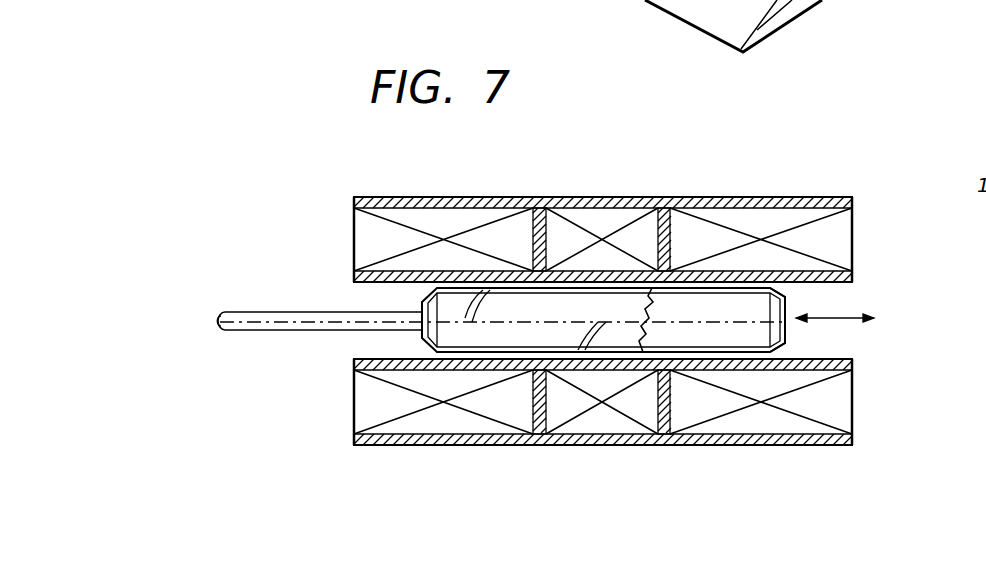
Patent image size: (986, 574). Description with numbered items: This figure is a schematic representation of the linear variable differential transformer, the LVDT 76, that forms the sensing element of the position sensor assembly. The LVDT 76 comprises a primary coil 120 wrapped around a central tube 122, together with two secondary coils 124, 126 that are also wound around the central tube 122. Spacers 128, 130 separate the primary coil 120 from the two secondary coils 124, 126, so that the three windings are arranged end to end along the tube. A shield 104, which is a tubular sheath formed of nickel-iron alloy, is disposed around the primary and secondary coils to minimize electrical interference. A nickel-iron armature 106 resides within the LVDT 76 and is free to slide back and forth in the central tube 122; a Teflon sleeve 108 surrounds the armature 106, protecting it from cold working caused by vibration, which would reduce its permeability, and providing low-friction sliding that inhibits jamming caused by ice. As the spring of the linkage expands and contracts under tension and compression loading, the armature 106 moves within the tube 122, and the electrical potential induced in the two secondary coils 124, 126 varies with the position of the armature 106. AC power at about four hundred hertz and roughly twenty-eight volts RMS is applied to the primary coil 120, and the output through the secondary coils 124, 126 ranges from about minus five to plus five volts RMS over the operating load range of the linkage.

The LVDT 76 is at (733, 185).
The shield 104 is at (448, 197).
The armature 106 is at (742, 302).
The Teflon sleeve 108 is at (787, 298).
The primary coil 120 is at (630, 198).
The central tube 122 is at (827, 358).
The secondary coil 124 is at (852, 237).
The secondary coil 126 is at (354, 243).
The spacer 128 is at (678, 402).
The spacer 130 is at (547, 246).